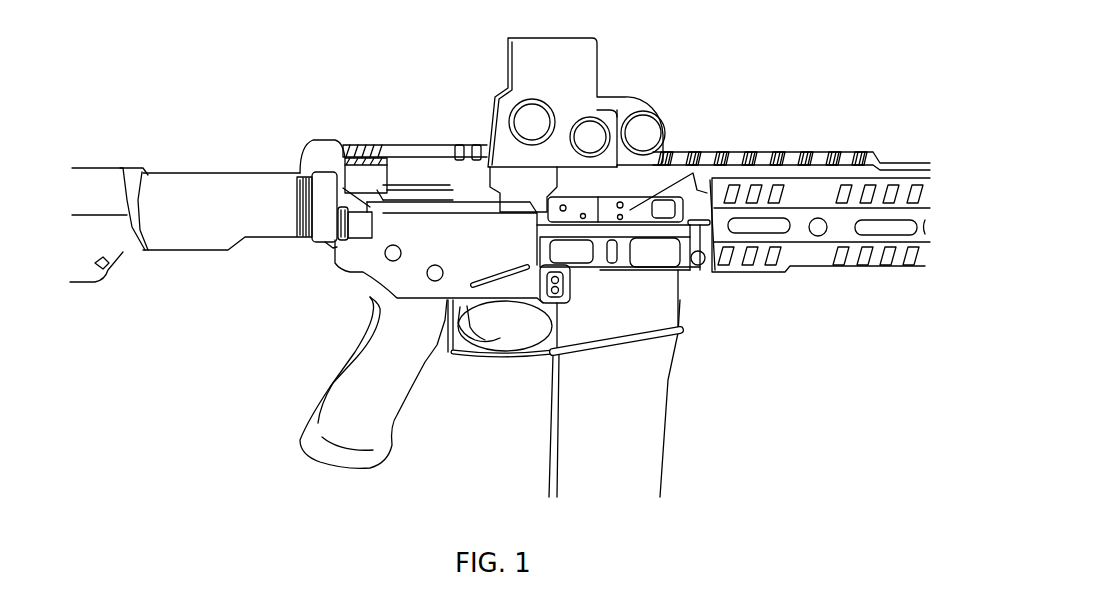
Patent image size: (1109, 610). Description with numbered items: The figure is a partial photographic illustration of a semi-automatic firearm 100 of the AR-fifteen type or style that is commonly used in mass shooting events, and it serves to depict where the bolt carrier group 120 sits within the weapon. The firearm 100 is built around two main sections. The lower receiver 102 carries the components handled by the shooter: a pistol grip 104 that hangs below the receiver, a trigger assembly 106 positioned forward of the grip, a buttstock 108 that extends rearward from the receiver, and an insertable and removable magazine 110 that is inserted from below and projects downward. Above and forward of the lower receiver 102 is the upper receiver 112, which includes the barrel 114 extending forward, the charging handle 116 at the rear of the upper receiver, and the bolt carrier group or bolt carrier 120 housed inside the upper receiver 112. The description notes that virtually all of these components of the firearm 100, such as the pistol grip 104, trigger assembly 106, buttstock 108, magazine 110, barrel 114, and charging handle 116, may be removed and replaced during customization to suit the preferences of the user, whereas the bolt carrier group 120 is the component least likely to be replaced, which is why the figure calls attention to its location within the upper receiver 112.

The firearm 100 is at (217, 342).
The lower receiver 102 is at (683, 298).
The pistol grip 104 is at (348, 355).
The trigger assembly 106 is at (497, 360).
The buttstock 108 is at (183, 252).
The magazine 110 is at (673, 398).
The upper receiver 112 is at (440, 193).
The barrel 114 is at (875, 270).
The charging handle 116 is at (343, 150).
The bolt carrier group 120 is at (693, 158).